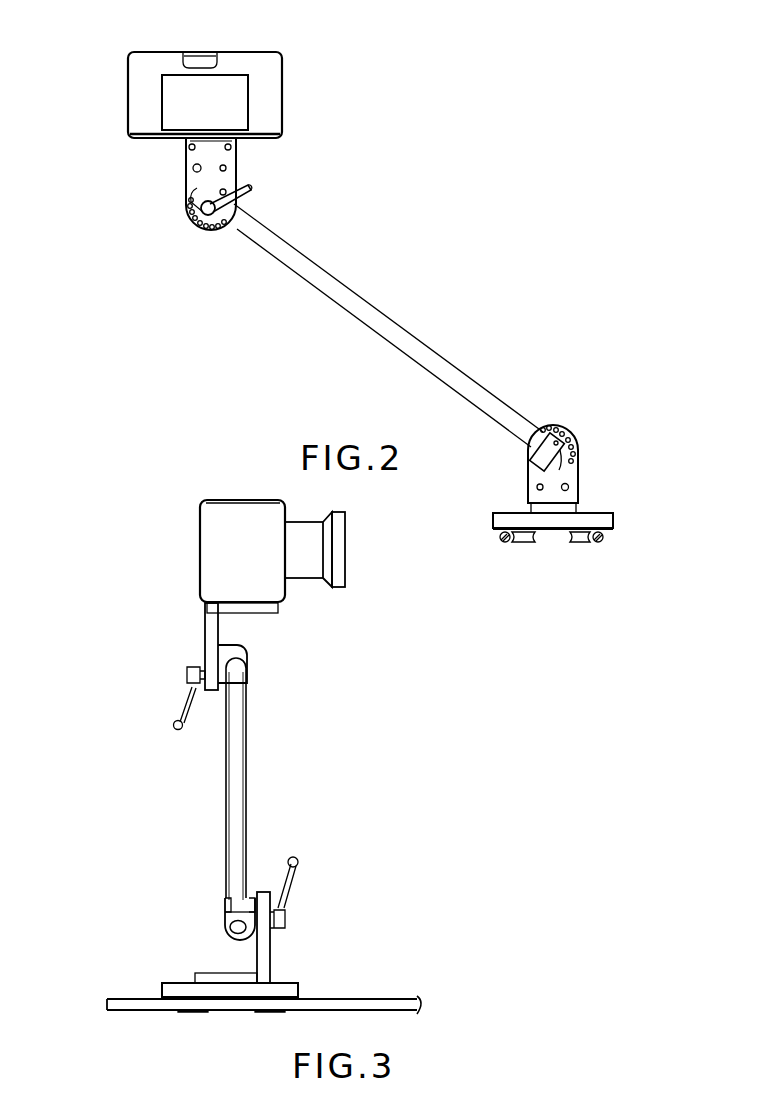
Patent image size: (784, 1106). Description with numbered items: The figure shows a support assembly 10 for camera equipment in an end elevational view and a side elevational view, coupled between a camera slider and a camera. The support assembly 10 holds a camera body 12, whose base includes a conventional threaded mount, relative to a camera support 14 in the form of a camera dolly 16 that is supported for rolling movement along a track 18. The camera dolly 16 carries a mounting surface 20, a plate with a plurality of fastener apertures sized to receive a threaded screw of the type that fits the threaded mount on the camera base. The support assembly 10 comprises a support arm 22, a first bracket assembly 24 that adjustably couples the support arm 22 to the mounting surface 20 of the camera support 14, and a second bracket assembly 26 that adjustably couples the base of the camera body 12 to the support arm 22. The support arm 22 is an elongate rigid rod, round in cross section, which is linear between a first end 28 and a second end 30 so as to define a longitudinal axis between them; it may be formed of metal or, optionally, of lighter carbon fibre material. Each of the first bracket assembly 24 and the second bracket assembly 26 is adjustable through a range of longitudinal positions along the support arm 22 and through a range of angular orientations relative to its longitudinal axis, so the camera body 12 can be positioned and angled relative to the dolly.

In FIG. 2, the support assembly 10 is at (190, 307).
In FIG. 3, the support assembly 10 is at (97, 785).
In FIG. 2, the camera body 12 is at (282, 104).
In FIG. 3, the camera body 12 is at (212, 556).
In FIG. 2, the camera support 14 is at (665, 497).
In FIG. 3, the camera support 14 is at (93, 953).
In FIG. 2, the camera dolly 16 is at (613, 523).
In FIG. 3, the camera dolly 16 is at (300, 987).
In FIG. 2, the track 18 is at (597, 540).
In FIG. 3, the track 18 is at (330, 1003).
In FIG. 2, the mounting surface 20 is at (592, 513).
In FIG. 3, the mounting surface 20 is at (290, 983).
In FIG. 2, the support arm 22 is at (392, 323).
In FIG. 3, the support arm 22 is at (243, 787).
In FIG. 2, the first bracket assembly 24 is at (655, 424).
In FIG. 3, the first bracket assembly 24 is at (195, 933).
In FIG. 2, the second bracket assembly 26 is at (128, 203).
In FIG. 3, the second bracket assembly 26 is at (177, 632).
In FIG. 2, the first end 28 is at (510, 420).
In FIG. 2, the second end 30 is at (262, 223).